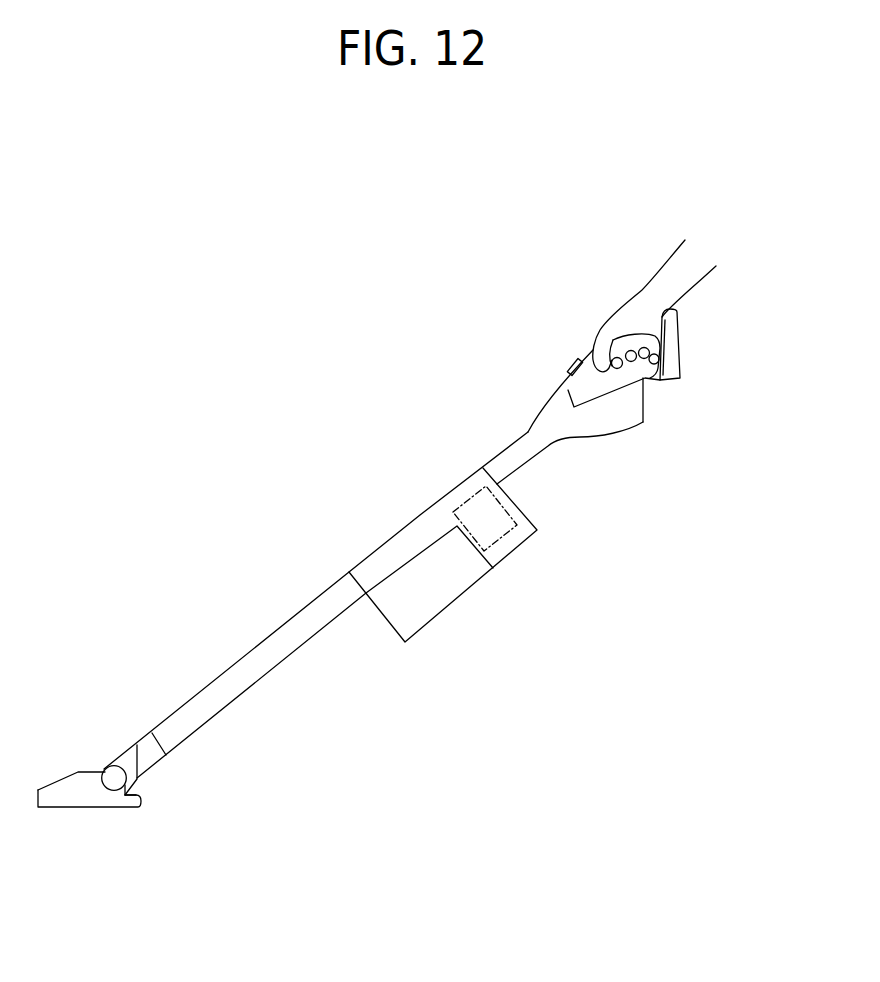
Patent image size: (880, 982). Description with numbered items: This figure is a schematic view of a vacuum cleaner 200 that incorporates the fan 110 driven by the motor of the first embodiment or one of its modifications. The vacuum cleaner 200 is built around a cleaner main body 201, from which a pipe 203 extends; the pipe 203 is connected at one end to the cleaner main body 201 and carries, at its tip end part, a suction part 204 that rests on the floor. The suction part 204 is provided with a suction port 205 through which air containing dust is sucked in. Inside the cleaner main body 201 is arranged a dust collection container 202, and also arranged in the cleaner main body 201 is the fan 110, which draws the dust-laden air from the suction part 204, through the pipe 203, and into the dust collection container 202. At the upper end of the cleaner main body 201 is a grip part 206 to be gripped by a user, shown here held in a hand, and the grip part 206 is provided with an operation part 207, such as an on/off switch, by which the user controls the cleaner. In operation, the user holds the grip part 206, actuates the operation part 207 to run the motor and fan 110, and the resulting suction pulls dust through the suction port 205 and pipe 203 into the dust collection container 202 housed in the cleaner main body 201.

The vacuum cleaner 200 is at (404, 352).
The cleaner main body 201 is at (473, 455).
The dust collection container 202 is at (433, 598).
The pipe 203 is at (240, 685).
The suction part 204 is at (88, 808).
The suction port 205 is at (122, 810).
The grip part 206 is at (568, 390).
The operation part 207 is at (578, 358).
The fan 110 is at (497, 541).